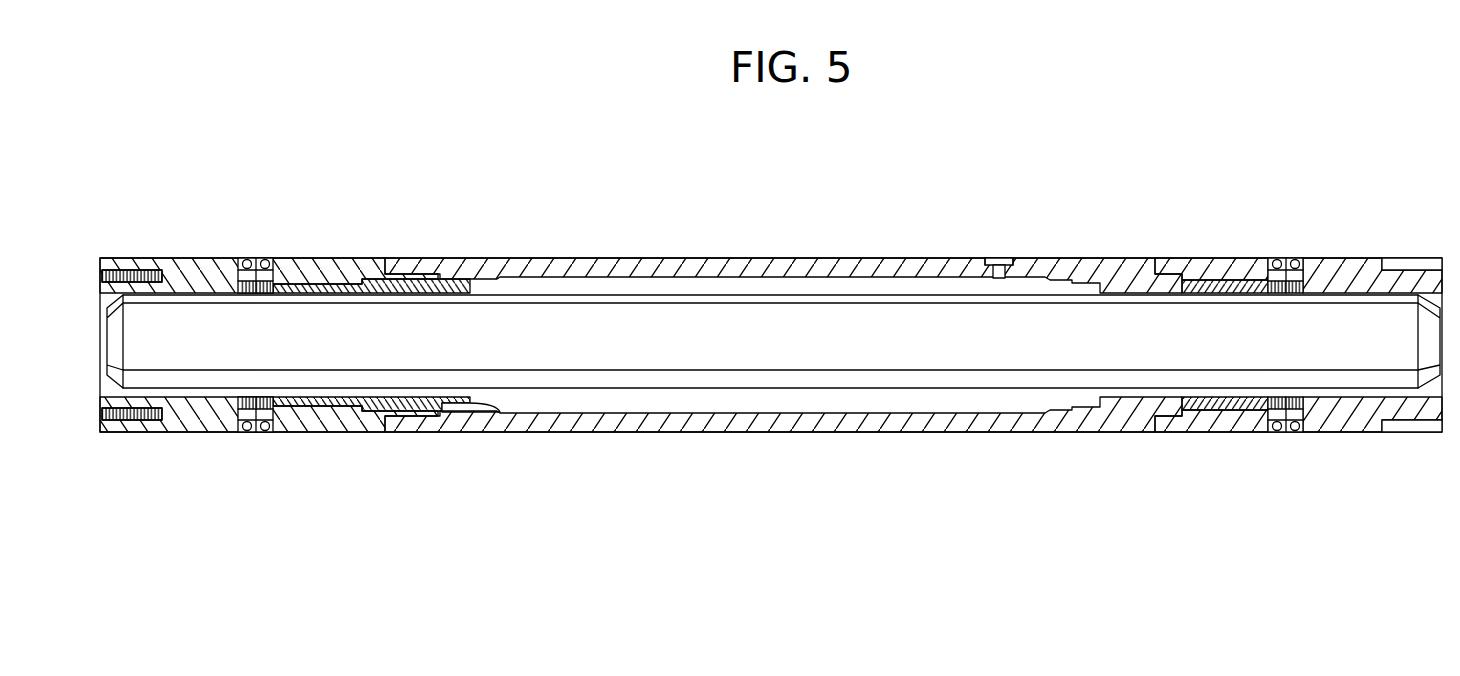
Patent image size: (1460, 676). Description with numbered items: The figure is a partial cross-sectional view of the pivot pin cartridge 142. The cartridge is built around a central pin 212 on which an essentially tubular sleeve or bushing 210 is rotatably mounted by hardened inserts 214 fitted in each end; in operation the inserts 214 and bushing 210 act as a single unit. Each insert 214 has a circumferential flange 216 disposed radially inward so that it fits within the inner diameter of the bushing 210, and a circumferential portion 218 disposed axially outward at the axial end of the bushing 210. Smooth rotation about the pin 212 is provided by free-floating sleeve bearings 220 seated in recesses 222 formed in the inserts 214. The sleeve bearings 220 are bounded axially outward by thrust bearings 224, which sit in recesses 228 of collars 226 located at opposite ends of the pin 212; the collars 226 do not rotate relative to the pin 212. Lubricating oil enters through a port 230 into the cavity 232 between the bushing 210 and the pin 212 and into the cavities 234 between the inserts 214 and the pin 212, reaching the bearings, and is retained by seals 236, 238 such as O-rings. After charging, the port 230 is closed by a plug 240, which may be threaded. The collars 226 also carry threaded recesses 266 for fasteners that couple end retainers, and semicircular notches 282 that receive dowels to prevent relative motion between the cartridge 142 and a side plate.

The pivot pin cartridge 142 is at (1118, 143).
The bushing 210 is at (712, 268).
The pin 212 is at (828, 345).
The hardened inserts 214 is at (393, 272).
The circumferential flanges 216 is at (1122, 268).
The circumferential portions 218 is at (1222, 265).
The sleeve bearings 220 is at (310, 400).
The recesses 222 is at (1213, 400).
The thrust bearings 224 is at (243, 400).
The collars 226 is at (174, 270).
The recesses 228 is at (247, 262).
The port 230 is at (1010, 258).
The cavity 232 is at (743, 400).
The cavities 234 is at (482, 406).
The seal 236 is at (240, 414).
The seal 238 is at (270, 263).
The plug 240 is at (990, 258).
The threaded recesses 266 is at (146, 272).
The semicircular notches 282 is at (1405, 428).